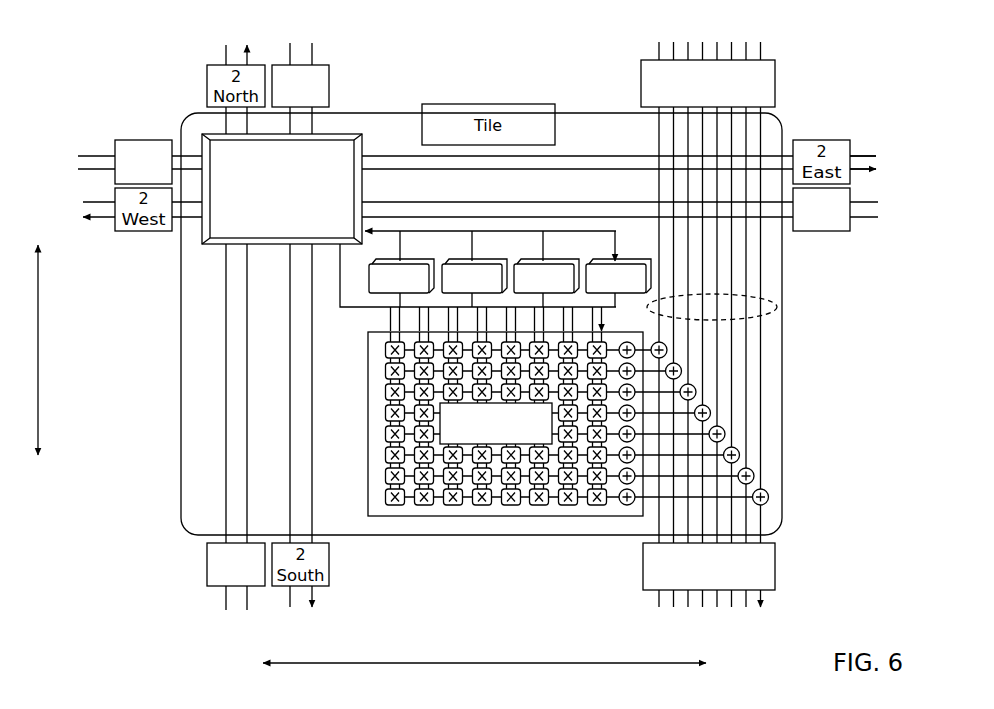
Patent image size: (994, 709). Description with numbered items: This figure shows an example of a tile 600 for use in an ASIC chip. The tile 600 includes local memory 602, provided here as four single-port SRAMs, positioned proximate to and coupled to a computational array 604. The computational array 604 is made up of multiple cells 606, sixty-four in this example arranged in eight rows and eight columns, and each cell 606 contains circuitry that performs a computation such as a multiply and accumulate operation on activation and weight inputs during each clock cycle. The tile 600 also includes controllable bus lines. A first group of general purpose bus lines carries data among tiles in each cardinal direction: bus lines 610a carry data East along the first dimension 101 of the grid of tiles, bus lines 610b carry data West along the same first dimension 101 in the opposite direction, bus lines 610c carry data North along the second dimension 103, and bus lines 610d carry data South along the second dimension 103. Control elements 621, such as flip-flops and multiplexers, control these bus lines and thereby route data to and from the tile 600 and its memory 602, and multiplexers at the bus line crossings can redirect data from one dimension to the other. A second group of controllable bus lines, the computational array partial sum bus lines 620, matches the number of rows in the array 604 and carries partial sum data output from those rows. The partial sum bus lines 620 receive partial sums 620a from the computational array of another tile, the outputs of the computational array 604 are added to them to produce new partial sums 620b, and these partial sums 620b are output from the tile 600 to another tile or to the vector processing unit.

The tile 600 is at (97, 33).
The control elements 621 is at (228, 217).
The local memory 602 is at (392, 262).
The computational array 604 is at (564, 445).
The cell 606 is at (395, 514).
The bus lines 610a is at (74, 142).
The bus lines 610b is at (879, 188).
The bus lines 610c is at (207, 613).
The bus lines 610d is at (329, 33).
The computational array partial sum bus lines 620 is at (768, 300).
The partial sums 620a is at (776, 86).
The new partial sums 620b is at (777, 566).
The second dimension 103 is at (40, 350).
The first dimension 101 is at (485, 662).